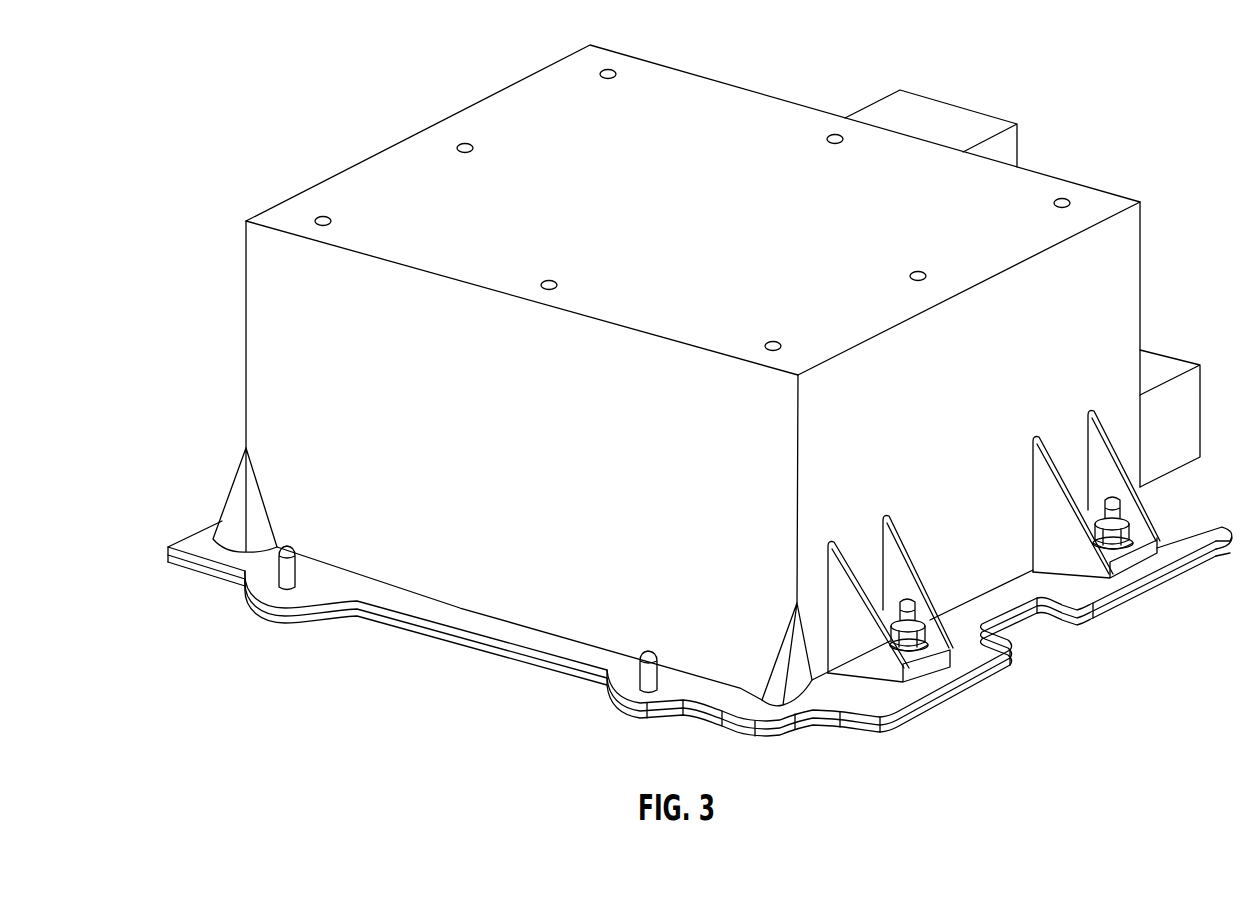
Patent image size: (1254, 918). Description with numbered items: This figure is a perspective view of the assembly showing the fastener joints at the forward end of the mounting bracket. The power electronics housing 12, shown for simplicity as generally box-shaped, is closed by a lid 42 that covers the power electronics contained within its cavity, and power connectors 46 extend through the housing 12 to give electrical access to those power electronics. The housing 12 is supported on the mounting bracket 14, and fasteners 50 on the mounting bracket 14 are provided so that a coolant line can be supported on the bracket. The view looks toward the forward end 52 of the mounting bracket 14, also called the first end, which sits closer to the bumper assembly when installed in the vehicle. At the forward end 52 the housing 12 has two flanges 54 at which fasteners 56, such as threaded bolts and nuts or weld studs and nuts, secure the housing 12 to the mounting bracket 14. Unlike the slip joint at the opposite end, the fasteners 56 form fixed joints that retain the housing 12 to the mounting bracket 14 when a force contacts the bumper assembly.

The power electronics housing 12 is at (538, 582).
The mounting bracket 14 is at (760, 707).
The lid 42 is at (732, 92).
The power connectors 46 is at (950, 116).
The fasteners 50 is at (277, 578).
The forward end 52 is at (1117, 608).
The flanges 54 is at (937, 664).
The fasteners 56 is at (927, 617).